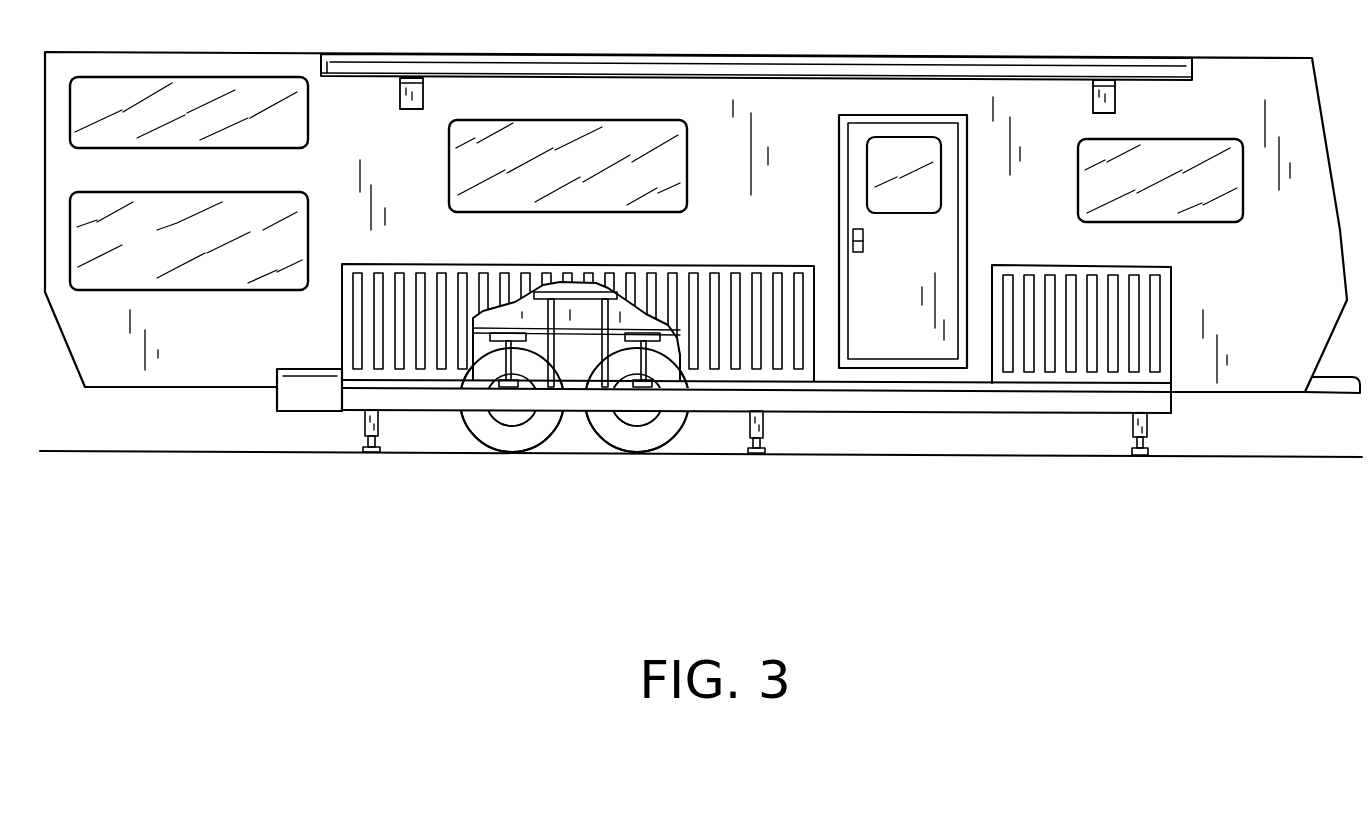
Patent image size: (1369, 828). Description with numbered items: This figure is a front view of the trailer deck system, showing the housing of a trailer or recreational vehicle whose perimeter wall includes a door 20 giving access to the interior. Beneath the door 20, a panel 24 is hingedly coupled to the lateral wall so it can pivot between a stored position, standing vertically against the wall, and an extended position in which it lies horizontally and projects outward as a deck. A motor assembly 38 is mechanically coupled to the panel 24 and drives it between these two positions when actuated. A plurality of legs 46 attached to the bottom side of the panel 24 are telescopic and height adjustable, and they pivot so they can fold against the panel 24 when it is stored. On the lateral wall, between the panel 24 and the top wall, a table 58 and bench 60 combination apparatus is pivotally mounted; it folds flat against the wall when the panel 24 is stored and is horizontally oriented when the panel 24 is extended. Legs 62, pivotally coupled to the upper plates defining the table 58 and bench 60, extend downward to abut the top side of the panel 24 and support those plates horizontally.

The door 20 is at (883, 317).
The panel 24 is at (1172, 413).
The motor assembly 38 is at (313, 411).
The legs 46 is at (786, 470).
The table 58 is at (569, 300).
The bench 60 is at (507, 304).
The legs 62 is at (550, 346).